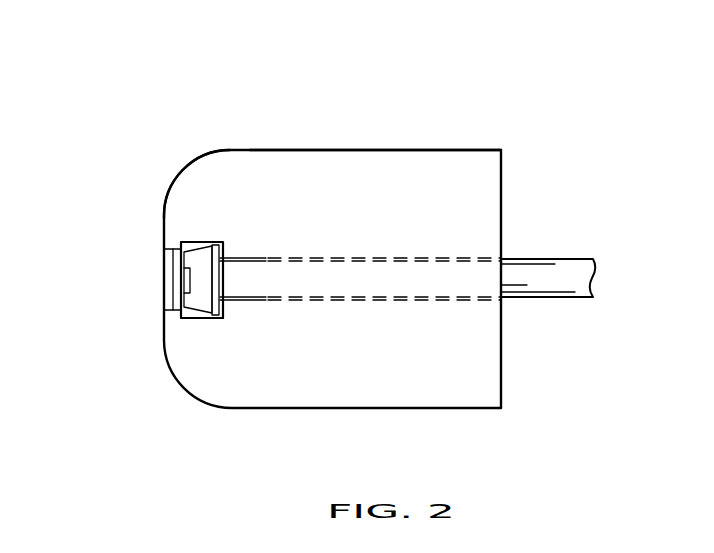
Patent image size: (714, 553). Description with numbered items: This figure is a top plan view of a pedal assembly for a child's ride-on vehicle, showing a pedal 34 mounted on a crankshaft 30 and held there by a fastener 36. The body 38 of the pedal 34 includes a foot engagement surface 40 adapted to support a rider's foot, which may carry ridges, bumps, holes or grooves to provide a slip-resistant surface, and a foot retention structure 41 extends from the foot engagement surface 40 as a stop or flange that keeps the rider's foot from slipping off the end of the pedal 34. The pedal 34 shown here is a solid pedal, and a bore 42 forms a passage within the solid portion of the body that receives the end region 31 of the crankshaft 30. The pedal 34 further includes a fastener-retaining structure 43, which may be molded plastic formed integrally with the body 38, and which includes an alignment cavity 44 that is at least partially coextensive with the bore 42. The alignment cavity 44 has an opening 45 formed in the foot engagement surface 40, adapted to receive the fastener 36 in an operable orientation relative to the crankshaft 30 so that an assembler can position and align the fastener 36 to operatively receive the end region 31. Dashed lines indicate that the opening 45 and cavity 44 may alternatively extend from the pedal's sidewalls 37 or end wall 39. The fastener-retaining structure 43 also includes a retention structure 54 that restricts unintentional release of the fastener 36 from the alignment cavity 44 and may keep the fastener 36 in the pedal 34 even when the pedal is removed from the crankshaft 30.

The crankshaft 30 is at (553, 258).
The end region 31 is at (452, 256).
The pedal 34 is at (210, 130).
The fastener 36 is at (198, 250).
The sidewalls 37 is at (408, 148).
The body 38 is at (280, 148).
The end wall 39 is at (163, 268).
The foot engagement surface 40 is at (381, 194).
The foot retention structure 41 is at (167, 299).
The bore 42 is at (465, 301).
The fastener-retaining structure 43 is at (207, 323).
The alignment cavity 44 is at (193, 317).
The opening 45 is at (228, 152).
The retention structure 54 is at (205, 275).